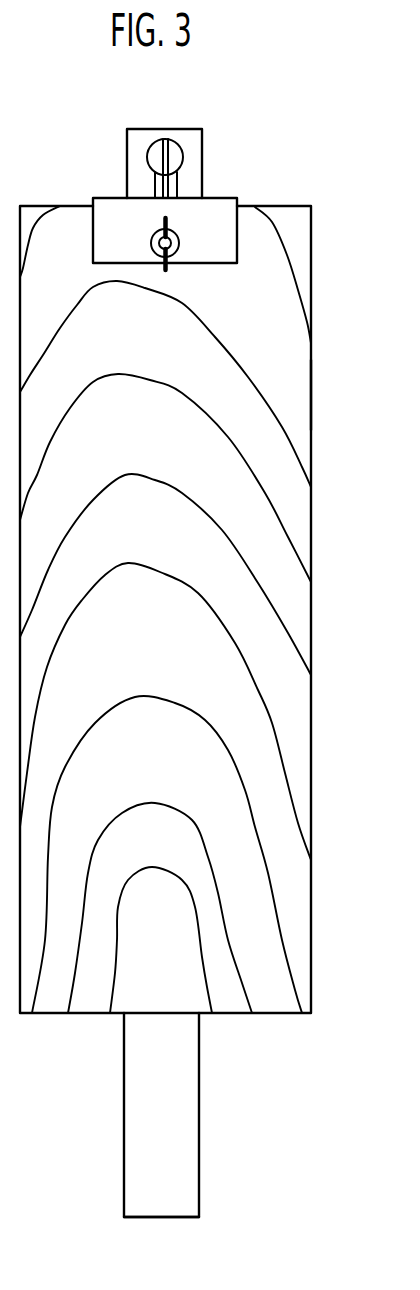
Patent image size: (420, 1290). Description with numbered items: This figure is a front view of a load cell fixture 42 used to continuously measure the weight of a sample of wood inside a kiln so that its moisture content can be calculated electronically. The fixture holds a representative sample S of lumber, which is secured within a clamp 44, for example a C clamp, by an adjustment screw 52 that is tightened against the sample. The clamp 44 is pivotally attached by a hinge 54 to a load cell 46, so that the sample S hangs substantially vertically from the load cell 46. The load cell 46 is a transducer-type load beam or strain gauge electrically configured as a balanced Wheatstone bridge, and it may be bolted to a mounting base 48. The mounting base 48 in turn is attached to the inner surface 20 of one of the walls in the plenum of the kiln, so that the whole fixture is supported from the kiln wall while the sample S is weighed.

The load cell fixture 42 is at (326, 642).
The sample S is at (313, 406).
The clamp 44 is at (220, 206).
The load cell 46 is at (199, 151).
The hinge 54 is at (150, 160).
The adjustment screw 52 is at (178, 243).
The inner surface 20 is at (188, 1102).
The mounting base 48 is at (187, 1218).